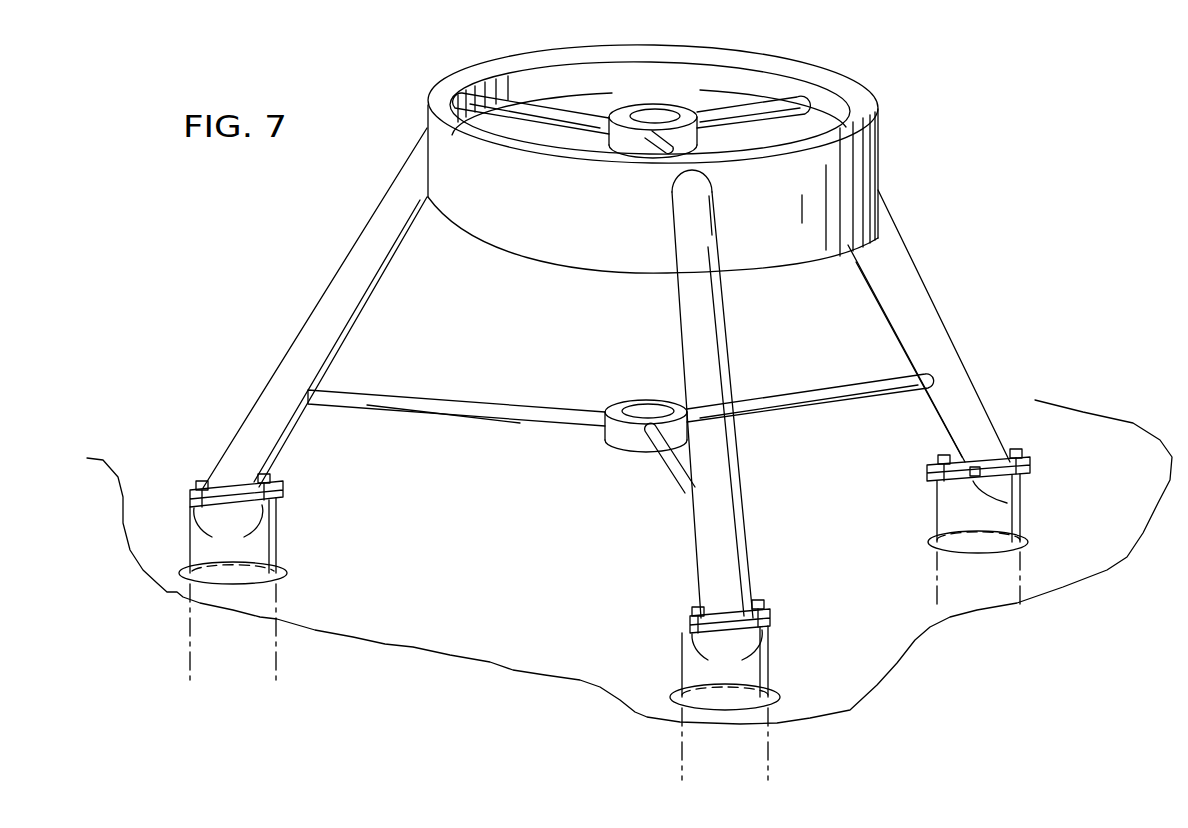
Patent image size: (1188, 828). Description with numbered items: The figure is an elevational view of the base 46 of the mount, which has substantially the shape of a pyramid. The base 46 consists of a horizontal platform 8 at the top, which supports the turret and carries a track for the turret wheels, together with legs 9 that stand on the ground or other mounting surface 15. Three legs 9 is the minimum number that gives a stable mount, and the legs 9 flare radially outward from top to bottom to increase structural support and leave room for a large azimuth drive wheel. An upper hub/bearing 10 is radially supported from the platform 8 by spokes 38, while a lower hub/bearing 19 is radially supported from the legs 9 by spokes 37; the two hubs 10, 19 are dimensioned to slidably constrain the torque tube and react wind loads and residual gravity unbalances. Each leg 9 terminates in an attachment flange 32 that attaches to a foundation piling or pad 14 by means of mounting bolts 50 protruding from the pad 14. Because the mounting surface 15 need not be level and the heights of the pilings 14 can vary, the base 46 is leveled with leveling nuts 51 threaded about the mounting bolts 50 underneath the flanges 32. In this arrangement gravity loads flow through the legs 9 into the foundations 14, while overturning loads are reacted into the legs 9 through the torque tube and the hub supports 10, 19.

The horizontal platform 8 is at (866, 111).
The upper hub/bearing assembly 10 is at (655, 110).
The spokes 38 is at (497, 108).
The legs 9 is at (606, 373).
The base 46 is at (903, 233).
The spokes 37 is at (472, 404).
The lower hub/bearing assembly 19 is at (620, 438).
The attachment flanges 32 is at (217, 490).
The mounting bolts 50 is at (277, 484).
The leveling nuts 51 is at (255, 505).
The foundation pilings or pads 14 is at (277, 537).
The mounting surface 15 is at (287, 576).